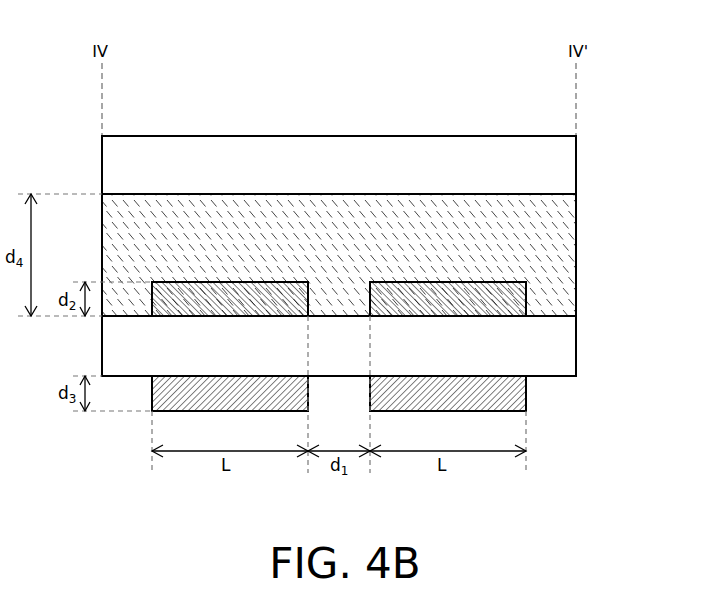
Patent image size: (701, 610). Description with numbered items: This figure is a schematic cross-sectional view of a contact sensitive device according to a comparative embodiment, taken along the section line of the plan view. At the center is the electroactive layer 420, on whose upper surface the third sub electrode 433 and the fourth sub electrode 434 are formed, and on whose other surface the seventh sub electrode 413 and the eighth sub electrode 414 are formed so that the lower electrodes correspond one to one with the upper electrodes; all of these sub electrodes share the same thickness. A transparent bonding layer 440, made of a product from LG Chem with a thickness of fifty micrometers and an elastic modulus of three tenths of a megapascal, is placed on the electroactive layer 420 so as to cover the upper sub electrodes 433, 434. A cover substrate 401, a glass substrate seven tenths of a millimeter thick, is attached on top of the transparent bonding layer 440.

The cover substrate 401 is at (553, 171).
The transparent bonding layer 440 is at (553, 240).
The fourth sub electrode 434 is at (510, 298).
The third sub electrode 433 is at (173, 310).
The electroactive layer 420 is at (553, 345).
The eighth sub electrode 414 is at (510, 396).
The seventh sub electrode 413 is at (176, 383).